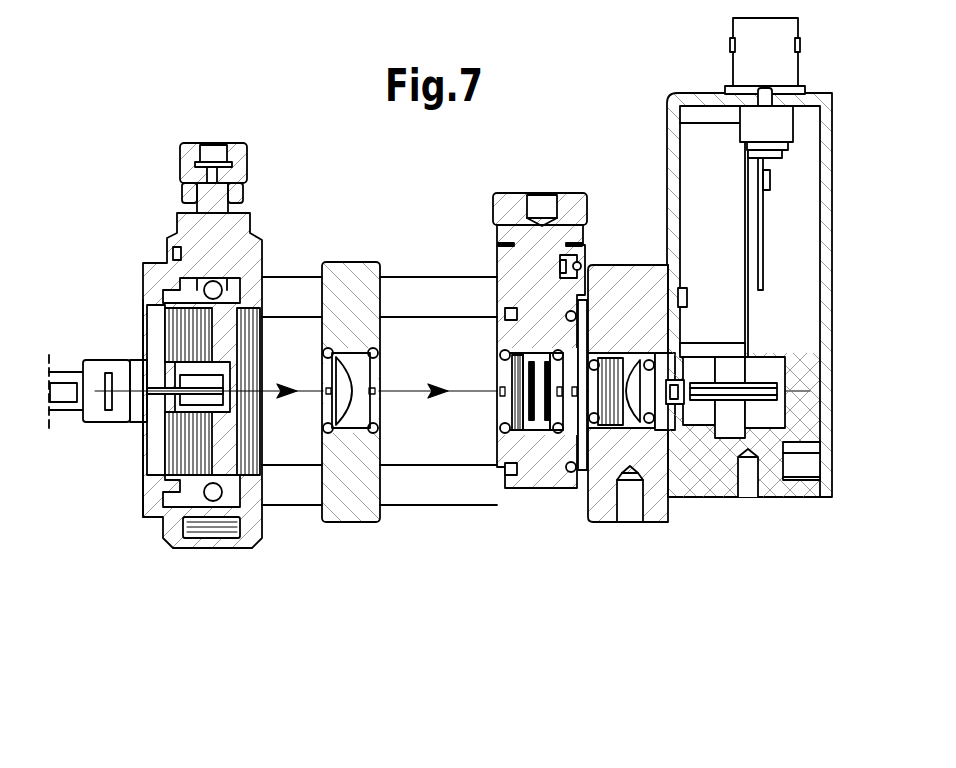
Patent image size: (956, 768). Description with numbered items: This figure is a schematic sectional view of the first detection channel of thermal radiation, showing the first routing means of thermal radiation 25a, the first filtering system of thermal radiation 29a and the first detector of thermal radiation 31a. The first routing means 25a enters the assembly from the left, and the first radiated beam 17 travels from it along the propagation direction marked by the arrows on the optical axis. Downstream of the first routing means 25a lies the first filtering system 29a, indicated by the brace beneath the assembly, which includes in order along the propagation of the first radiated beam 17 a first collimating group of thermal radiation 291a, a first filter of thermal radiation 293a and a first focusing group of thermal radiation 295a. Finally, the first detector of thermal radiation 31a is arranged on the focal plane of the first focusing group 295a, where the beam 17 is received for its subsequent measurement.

The first routing means of thermal radiation 25a is at (103, 360).
The first radiated beam 17 is at (470, 388).
The first collimating group of thermal radiation 291a is at (358, 262).
The first filter of thermal radiation 293a is at (527, 489).
The first focusing group of thermal radiation 295a is at (631, 426).
The first filtering system of thermal radiation 29a is at (478, 427).
The first detector of thermal radiation 31a is at (725, 498).